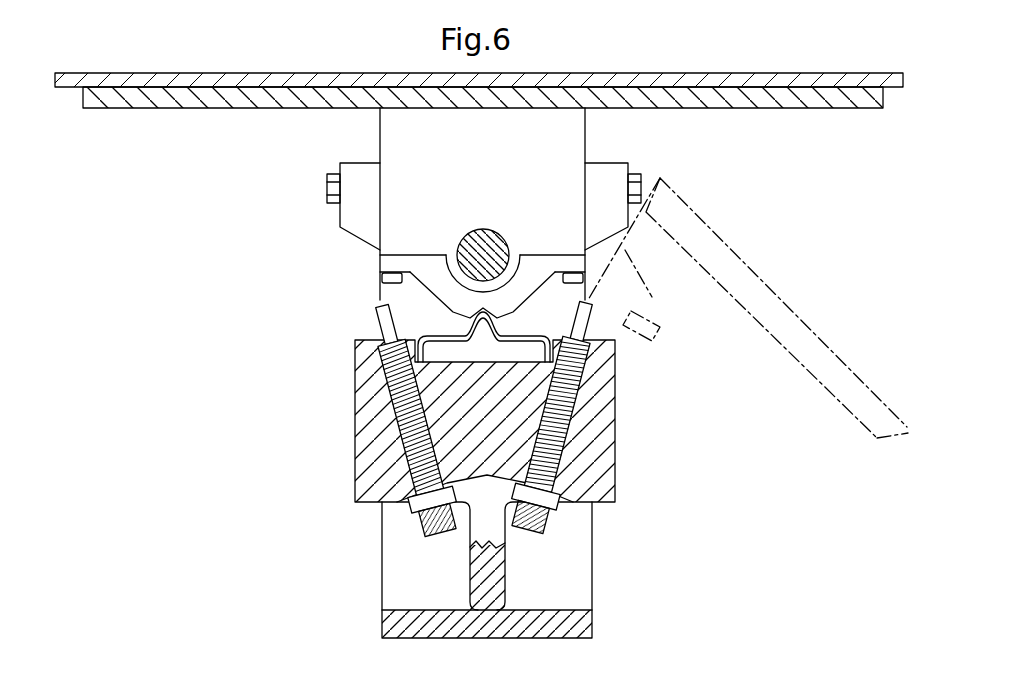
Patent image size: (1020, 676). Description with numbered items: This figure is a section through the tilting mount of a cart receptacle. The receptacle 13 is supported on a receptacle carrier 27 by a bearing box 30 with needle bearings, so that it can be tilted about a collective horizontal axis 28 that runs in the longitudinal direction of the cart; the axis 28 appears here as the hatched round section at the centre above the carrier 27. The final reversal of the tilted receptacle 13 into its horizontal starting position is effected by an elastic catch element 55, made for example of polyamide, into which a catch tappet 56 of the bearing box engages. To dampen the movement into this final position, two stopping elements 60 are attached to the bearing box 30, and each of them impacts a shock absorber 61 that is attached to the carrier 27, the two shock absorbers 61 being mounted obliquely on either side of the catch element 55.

The receptacle 13 is at (267, 72).
The bearing box 30 is at (418, 172).
The stopping element 60 is at (360, 208).
The horizontal axis 28 is at (472, 247).
The receptacle carrier 27 is at (400, 295).
The catch tappet 56 is at (448, 300).
The elastic catch element 55 is at (500, 332).
The shock absorber 61 is at (395, 418).